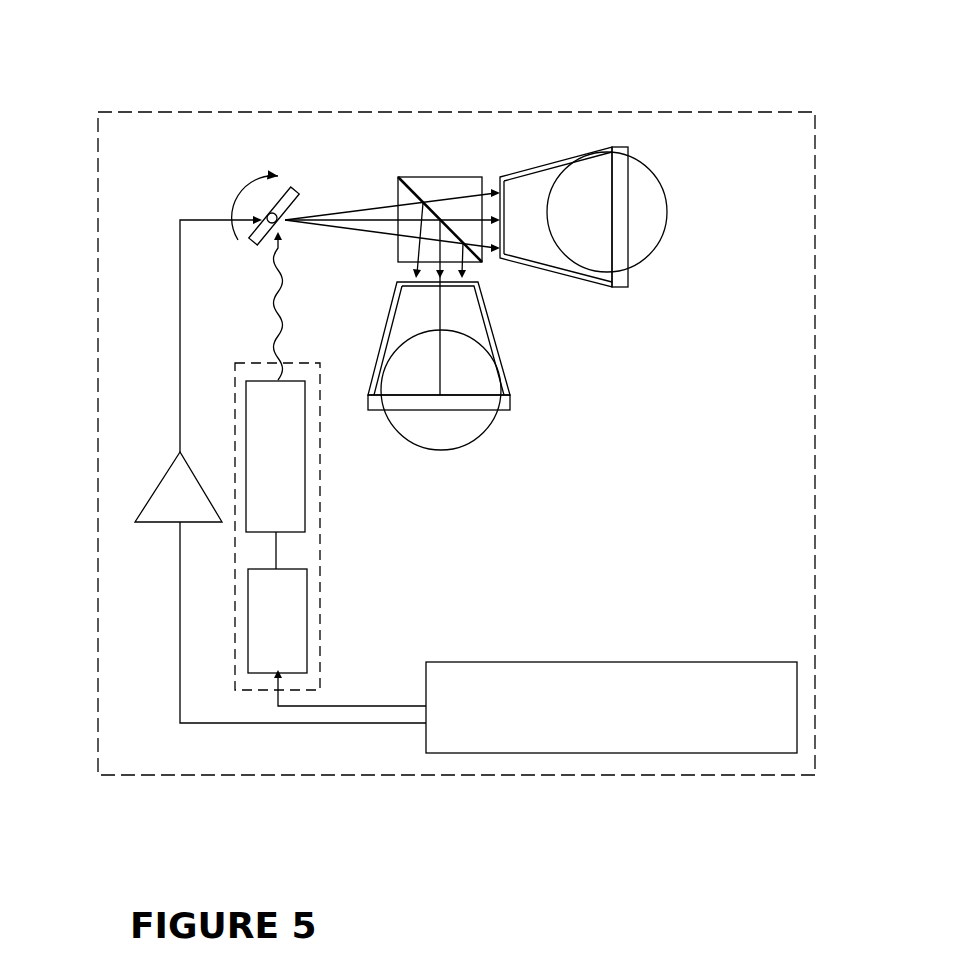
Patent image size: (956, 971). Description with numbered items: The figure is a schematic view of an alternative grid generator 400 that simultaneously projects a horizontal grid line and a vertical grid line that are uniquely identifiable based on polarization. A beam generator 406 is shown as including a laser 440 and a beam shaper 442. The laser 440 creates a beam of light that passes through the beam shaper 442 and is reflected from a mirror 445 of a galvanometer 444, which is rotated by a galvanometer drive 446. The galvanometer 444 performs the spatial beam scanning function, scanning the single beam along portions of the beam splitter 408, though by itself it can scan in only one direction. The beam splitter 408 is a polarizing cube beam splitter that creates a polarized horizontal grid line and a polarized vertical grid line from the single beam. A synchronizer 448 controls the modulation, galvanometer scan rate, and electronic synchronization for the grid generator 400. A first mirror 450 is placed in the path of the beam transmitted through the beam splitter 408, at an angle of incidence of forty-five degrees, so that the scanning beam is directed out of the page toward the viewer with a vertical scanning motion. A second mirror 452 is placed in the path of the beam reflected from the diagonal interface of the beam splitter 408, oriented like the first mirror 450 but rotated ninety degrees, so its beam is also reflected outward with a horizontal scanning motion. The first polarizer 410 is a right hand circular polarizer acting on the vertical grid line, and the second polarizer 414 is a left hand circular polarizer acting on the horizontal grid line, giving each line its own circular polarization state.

The grid generator 400 is at (154, 104).
The beam generator 406 is at (230, 361).
The beam splitter 408 is at (440, 177).
The first polarizer 410 is at (664, 182).
The second polarizer 414 is at (474, 442).
The laser 440 is at (255, 643).
The beam shaper 442 is at (262, 426).
The galvanometer 444 is at (289, 183).
The mirror 445 is at (300, 200).
The galvanometer drive 446 is at (160, 522).
The synchronizer 448 is at (647, 748).
The first mirror 450 is at (612, 147).
The second mirror 452 is at (490, 335).